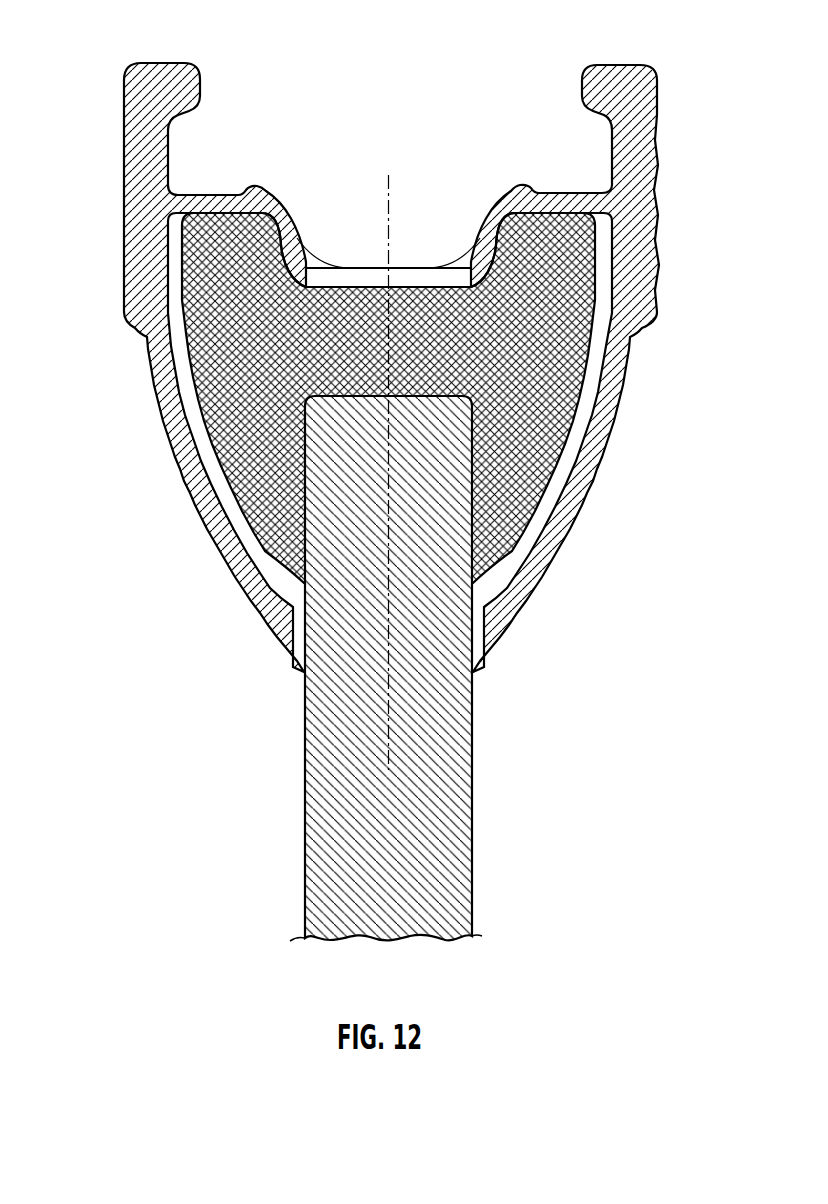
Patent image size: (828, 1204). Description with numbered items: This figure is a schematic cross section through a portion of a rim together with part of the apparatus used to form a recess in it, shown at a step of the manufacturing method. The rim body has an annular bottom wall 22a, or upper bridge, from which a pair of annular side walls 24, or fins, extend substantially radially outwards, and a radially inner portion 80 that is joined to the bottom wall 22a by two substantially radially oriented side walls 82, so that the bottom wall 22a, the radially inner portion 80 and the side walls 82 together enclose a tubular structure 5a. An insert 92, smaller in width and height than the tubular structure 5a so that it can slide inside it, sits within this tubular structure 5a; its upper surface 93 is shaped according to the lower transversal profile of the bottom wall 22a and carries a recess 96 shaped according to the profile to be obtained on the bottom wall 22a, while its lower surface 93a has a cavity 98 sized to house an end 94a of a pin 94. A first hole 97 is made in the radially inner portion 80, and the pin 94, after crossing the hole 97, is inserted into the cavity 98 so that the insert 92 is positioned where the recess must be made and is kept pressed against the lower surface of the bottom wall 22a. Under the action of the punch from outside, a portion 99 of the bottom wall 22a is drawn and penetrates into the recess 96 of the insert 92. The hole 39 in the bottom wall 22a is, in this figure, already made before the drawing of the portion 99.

The annular side walls 24 is at (137, 124).
The annular bottom wall 22a is at (215, 196).
The upper surface 93 is at (264, 190).
The recess 96 is at (348, 287).
The hole 39 is at (452, 266).
The portion 99 is at (487, 240).
The insert 92 is at (543, 370).
The side walls 82 is at (597, 440).
The tubular structure 5a is at (205, 448).
The end of the pin 94a is at (433, 450).
The cavity 98 is at (464, 512).
The first hole 97 is at (482, 638).
The lower surface 93a is at (267, 583).
The radially inner portion 80 is at (268, 642).
The pin 94 is at (345, 760).